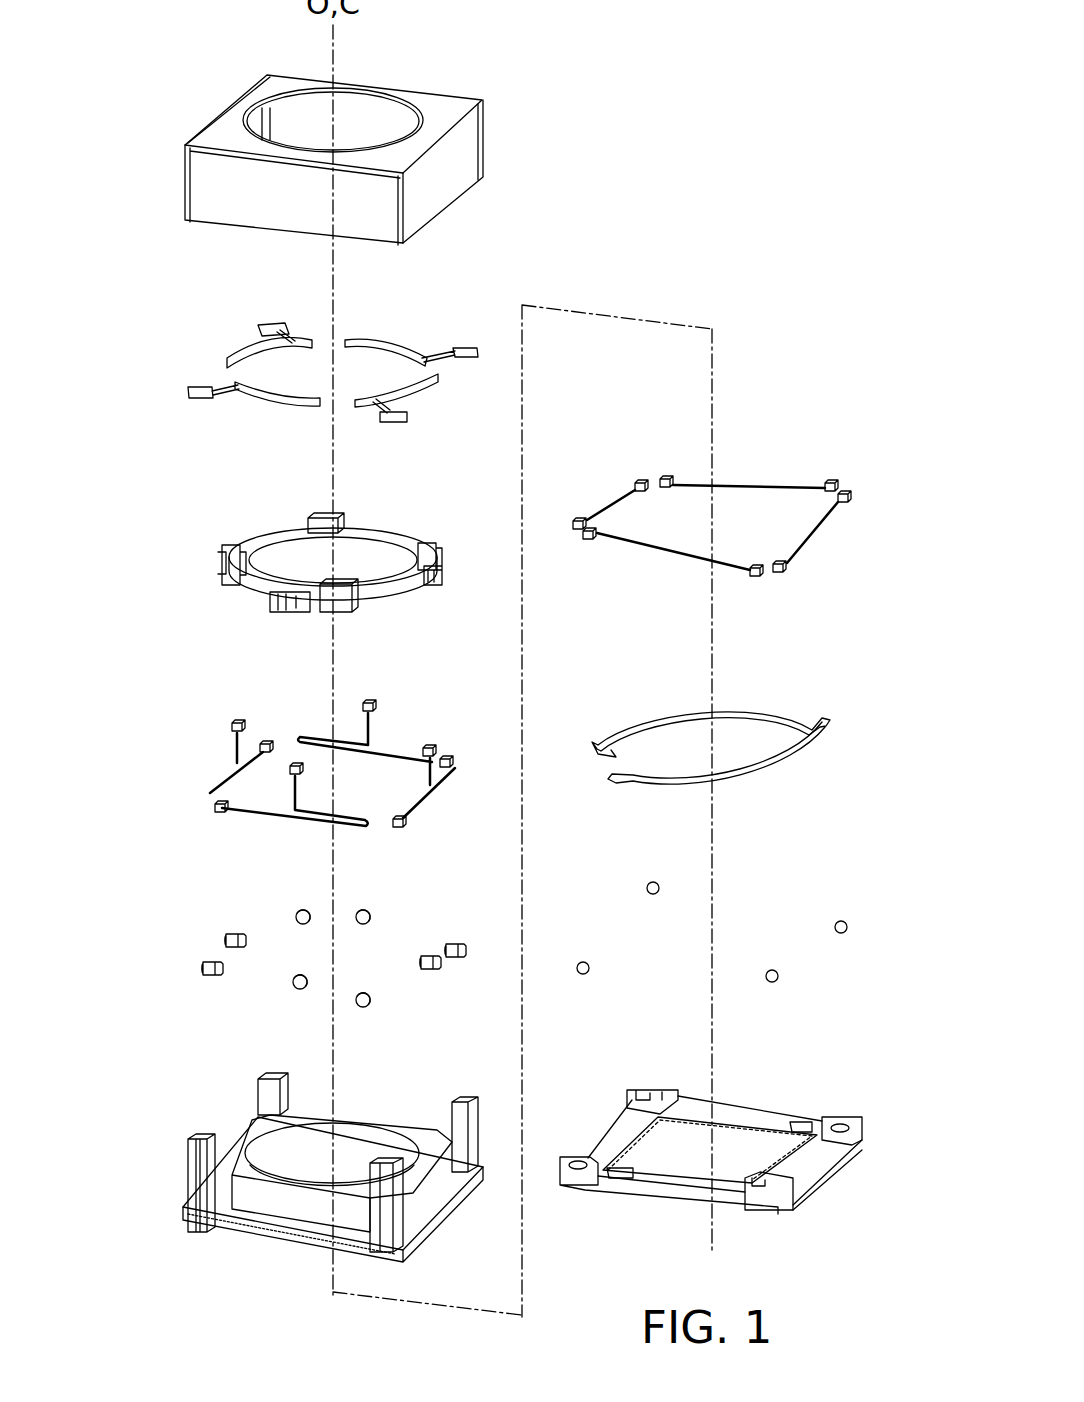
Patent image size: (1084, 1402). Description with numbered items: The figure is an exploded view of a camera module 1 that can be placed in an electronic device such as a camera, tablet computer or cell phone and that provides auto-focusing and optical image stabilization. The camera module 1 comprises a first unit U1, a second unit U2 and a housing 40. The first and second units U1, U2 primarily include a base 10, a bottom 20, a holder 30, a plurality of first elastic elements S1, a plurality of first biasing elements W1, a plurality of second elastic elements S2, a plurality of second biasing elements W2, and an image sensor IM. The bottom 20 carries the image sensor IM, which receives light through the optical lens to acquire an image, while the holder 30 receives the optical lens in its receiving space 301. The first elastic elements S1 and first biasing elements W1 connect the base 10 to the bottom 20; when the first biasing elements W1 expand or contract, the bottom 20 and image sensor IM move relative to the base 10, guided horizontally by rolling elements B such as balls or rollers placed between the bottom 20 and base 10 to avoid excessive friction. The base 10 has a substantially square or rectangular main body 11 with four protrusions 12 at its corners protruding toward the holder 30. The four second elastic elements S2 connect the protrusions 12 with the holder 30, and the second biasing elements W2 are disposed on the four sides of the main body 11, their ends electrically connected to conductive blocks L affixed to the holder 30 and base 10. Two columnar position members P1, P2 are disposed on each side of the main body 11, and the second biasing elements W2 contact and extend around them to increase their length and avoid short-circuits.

The camera module 1 is at (91, 20).
The housing 40 is at (445, 178).
The second elastic element S2 is at (258, 360).
The holder 30 is at (234, 548).
The receiving space 301 is at (400, 553).
The first biasing element W1 is at (606, 478).
The second biasing element W2 is at (220, 790).
The conductive block L is at (663, 478).
The first elastic element S1 is at (648, 722).
The rolling element B is at (648, 881).
The position member P1 is at (224, 940).
The position member P2 is at (295, 913).
The base 10 is at (240, 1142).
The main body 11 is at (296, 1205).
The protrusion 12 is at (192, 1152).
The bottom 20 is at (603, 1136).
The image sensor IM is at (740, 1150).
The first unit U1 is at (124, 322).
The second unit U2 is at (875, 480).